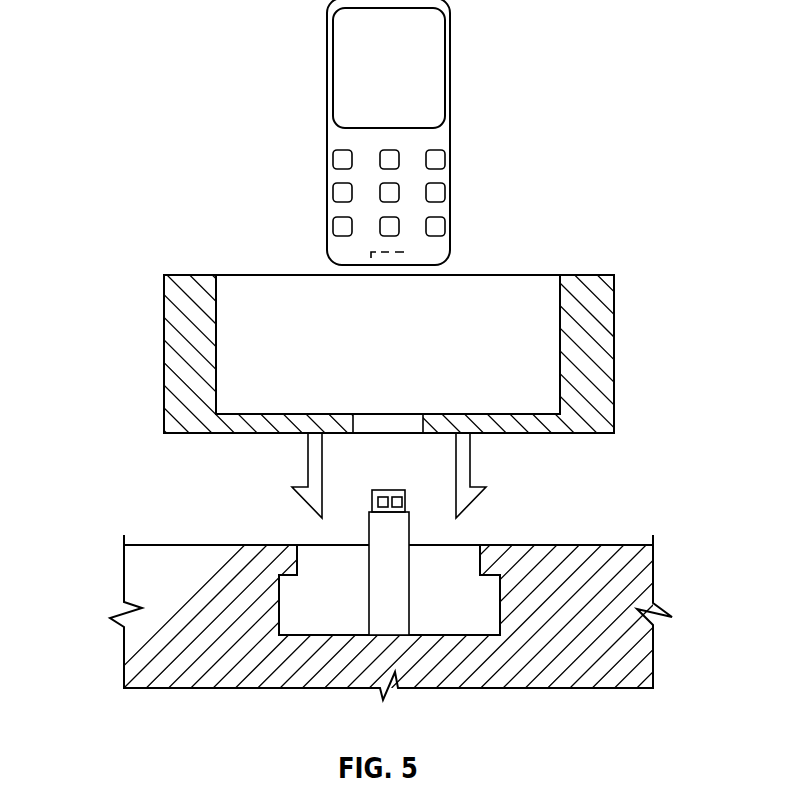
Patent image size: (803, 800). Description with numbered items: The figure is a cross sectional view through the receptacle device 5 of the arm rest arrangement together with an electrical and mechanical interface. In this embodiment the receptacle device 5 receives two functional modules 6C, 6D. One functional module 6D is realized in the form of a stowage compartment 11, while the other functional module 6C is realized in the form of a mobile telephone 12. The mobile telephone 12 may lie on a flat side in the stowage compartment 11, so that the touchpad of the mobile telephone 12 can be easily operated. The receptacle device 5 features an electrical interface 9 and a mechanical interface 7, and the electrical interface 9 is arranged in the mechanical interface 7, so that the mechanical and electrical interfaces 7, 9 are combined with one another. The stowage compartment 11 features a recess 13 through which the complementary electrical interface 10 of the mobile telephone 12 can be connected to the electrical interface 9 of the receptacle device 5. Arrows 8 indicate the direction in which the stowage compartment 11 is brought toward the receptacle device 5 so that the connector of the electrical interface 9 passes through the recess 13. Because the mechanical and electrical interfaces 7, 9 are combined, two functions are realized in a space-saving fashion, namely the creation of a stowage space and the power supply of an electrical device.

The receptacle device 5 is at (643, 578).
The functional module 6C is at (264, 122).
The functional module 6D is at (126, 351).
The mechanical interface 7 is at (449, 652).
The insertion direction arrows 8 is at (456, 490).
The electrical interface 9 is at (409, 597).
The complementary electrical interface 10 is at (405, 260).
The stowage compartment 11 is at (614, 325).
The mobile telephone 12 is at (450, 137).
The recess 13 is at (392, 404).